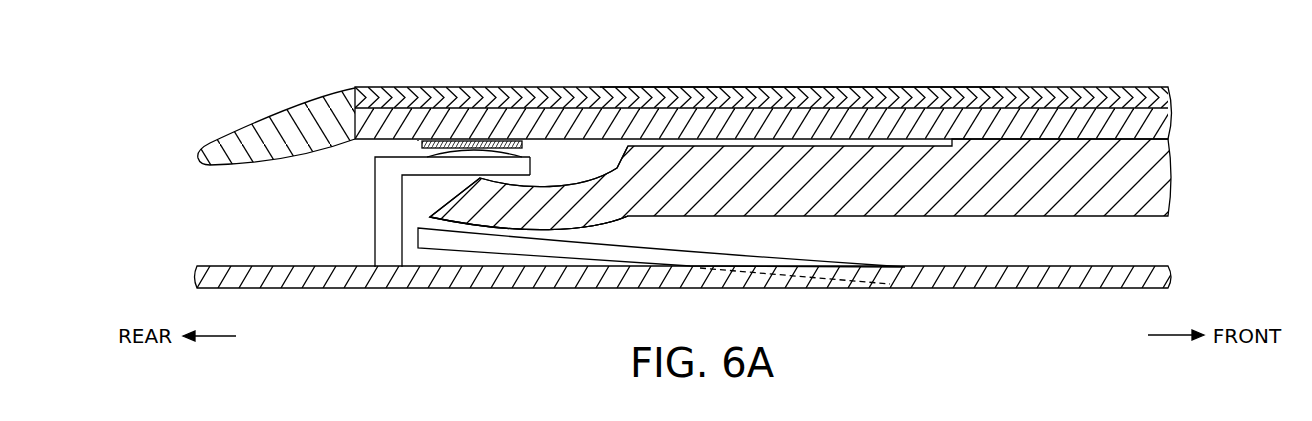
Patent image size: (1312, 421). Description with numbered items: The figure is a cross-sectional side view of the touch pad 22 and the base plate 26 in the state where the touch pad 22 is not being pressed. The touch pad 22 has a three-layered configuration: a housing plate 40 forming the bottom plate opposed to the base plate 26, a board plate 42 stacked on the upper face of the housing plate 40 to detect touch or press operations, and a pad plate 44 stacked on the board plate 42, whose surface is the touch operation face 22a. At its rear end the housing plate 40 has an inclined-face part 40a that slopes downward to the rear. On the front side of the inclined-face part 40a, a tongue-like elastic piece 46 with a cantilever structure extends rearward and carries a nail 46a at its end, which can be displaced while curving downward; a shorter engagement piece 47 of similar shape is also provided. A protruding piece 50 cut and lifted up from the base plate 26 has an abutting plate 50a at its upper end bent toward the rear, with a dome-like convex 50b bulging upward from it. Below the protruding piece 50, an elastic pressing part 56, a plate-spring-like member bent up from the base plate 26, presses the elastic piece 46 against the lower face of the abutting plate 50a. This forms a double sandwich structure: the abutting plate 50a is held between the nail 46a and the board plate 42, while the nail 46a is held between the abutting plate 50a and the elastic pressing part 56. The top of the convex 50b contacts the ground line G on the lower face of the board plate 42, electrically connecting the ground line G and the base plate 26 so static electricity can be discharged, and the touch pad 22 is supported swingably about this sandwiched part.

The touch pad 22 is at (763, 81).
The touch operation face 22a is at (793, 86).
The base plate 26 is at (1012, 288).
The housing plate 40 is at (685, 183).
The inclined-face part 40a is at (266, 108).
The board plate 42 is at (963, 120).
The pad plate 44 is at (893, 98).
The elastic piece 46 is at (547, 183).
The nail 46a is at (529, 274).
The engagement piece 47 is at (520, 207).
The protruding piece 50 is at (439, 185).
The abutting plate 50a is at (527, 158).
The convex 50b is at (468, 152).
The elastic pressing part 56 is at (443, 238).
The ground line G is at (420, 152).